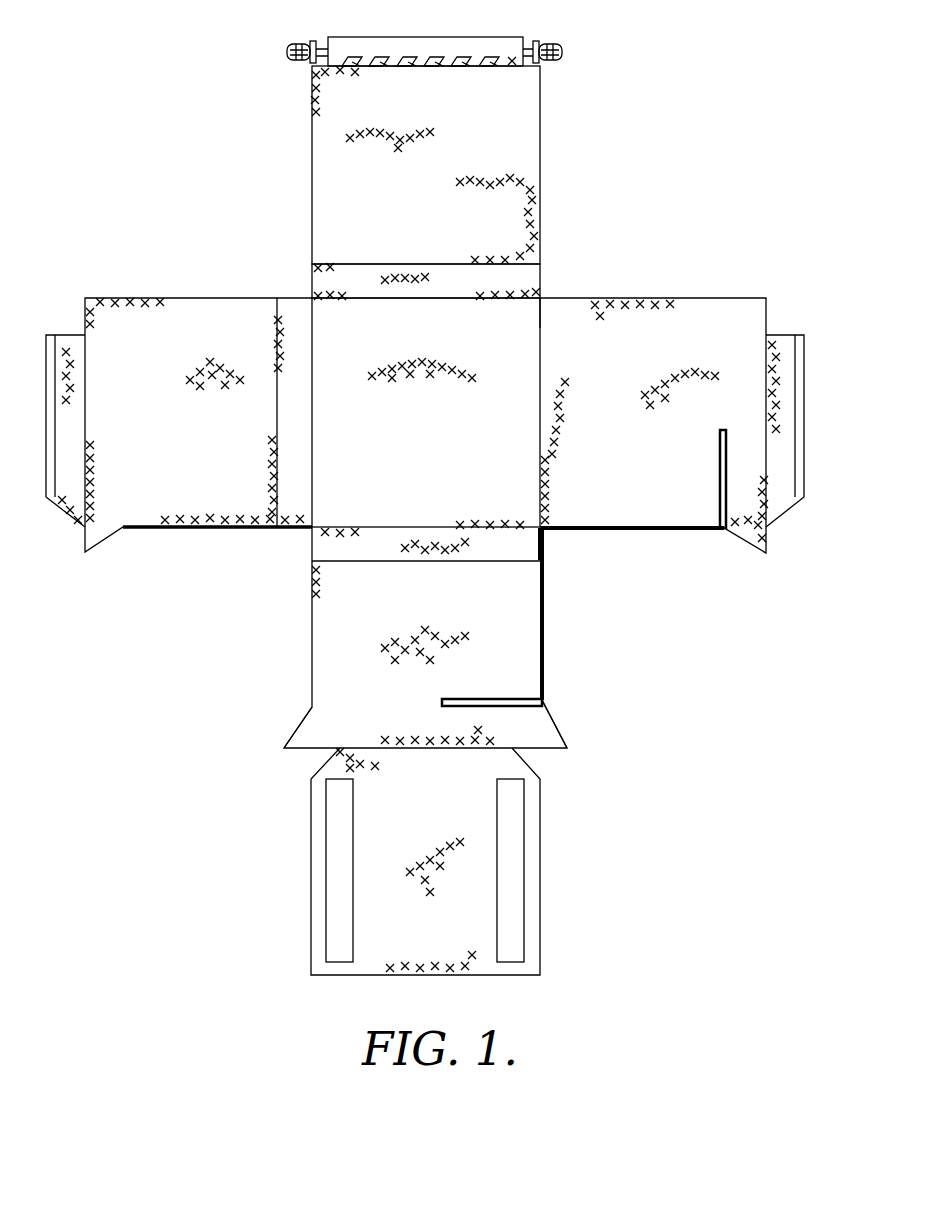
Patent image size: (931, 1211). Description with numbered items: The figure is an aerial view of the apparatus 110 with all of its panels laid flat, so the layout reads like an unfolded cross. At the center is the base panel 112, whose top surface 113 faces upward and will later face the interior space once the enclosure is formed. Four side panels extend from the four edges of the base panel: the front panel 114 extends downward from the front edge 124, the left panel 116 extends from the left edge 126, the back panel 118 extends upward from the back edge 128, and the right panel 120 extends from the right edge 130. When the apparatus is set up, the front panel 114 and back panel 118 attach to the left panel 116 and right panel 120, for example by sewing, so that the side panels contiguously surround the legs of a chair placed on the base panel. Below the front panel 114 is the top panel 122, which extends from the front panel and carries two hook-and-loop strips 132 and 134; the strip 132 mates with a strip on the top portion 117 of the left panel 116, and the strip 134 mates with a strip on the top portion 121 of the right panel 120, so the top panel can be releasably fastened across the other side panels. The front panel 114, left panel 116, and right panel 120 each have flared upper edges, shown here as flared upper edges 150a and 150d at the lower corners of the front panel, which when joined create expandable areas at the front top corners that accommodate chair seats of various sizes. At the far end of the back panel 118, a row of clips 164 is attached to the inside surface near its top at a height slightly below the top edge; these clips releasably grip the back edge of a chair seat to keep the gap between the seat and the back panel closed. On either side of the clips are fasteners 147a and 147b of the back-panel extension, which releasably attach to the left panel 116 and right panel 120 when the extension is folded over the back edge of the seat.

The apparatus 110 is at (655, 172).
The base panel 112 is at (324, 525).
The top surface 113 is at (438, 424).
The front panel 114 is at (533, 587).
The left panel 116 is at (609, 523).
The top portion 117 is at (786, 338).
The back panel 118 is at (540, 237).
The right panel 120 is at (207, 523).
The top portion 121 is at (67, 338).
The top panel 122 is at (427, 975).
The front edge 124 is at (386, 528).
The left edge 126 is at (549, 316).
The back edge 128 is at (346, 298).
The right edge 130 is at (308, 391).
The hook-and-loop strip 132 is at (515, 851).
The hook-and-loop strip 134 is at (327, 876).
The fastener 147a is at (548, 46).
The fastener 147b is at (296, 46).
The flared upper edge 150a is at (553, 728).
The flared upper edge 150d is at (296, 728).
The clips 164 is at (467, 60).